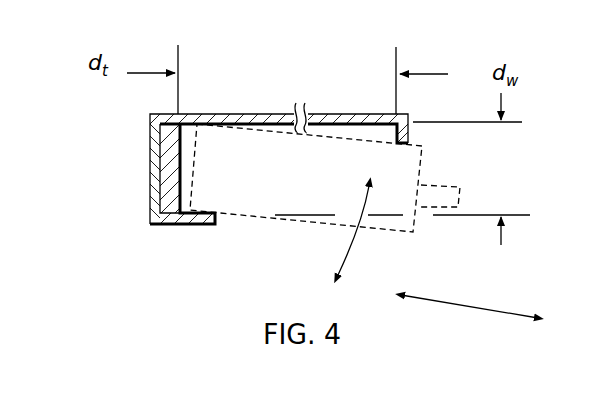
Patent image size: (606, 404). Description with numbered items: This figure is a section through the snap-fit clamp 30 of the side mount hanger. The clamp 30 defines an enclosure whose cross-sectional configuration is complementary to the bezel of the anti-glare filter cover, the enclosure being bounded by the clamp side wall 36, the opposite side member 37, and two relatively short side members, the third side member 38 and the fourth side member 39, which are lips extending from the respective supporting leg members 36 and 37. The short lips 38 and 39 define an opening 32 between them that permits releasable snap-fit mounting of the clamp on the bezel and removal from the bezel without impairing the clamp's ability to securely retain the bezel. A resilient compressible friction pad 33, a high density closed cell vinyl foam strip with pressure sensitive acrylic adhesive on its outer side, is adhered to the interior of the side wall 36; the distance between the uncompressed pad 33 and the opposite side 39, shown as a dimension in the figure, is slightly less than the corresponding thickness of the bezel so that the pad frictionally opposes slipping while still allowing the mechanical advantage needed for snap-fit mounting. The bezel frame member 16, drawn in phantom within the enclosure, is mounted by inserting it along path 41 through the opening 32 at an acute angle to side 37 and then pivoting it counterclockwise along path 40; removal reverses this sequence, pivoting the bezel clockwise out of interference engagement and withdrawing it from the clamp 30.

The snap-fit clamp 30 is at (145, 112).
The side member 37 is at (233, 113).
The fourth side member 39 is at (410, 132).
The resilient compressible friction pad 33 is at (167, 155).
The clamp side wall 36 is at (153, 183).
The third side member 38 is at (180, 223).
The opening 32 is at (217, 222).
The frame member 16 is at (417, 222).
The pivoting path 40 is at (366, 224).
The insertion path 41 is at (465, 307).